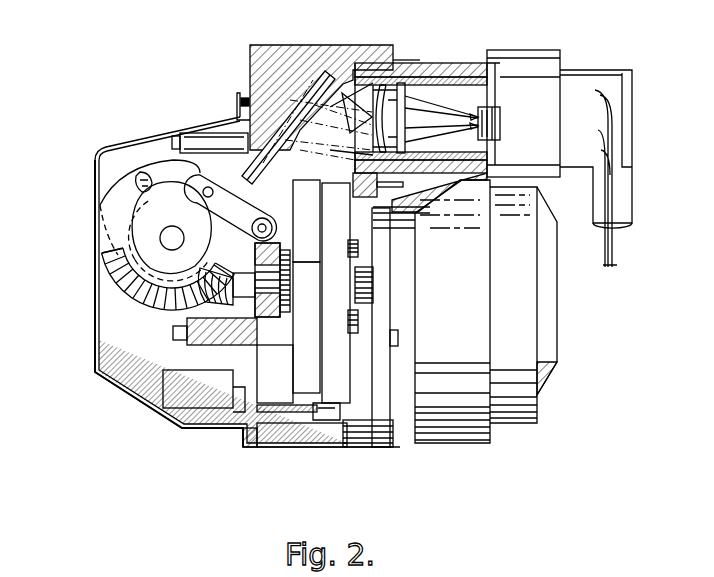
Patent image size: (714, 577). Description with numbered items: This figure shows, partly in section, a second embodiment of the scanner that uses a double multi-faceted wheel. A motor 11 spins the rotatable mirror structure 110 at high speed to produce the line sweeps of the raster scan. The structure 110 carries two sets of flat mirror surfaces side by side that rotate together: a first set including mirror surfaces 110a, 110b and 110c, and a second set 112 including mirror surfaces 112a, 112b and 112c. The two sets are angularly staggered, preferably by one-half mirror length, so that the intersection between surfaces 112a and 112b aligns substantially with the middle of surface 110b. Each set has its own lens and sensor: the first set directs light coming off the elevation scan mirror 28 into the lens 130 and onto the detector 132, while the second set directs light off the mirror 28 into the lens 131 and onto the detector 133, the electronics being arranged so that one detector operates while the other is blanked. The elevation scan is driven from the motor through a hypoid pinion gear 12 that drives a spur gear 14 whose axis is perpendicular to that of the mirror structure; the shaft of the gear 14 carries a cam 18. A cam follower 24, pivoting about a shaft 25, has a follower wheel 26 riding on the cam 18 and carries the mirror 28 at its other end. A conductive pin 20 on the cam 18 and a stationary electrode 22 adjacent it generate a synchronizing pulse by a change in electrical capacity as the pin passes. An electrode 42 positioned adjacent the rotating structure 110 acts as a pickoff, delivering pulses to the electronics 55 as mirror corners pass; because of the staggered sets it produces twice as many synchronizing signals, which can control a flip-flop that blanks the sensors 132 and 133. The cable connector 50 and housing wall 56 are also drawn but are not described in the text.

The motor 11 is at (552, 312).
The hypoid gear 12 is at (170, 305).
The spur gear 14 is at (135, 300).
The cam 18 is at (130, 208).
The conductive pin 20 is at (143, 217).
The stationary electrode 22 is at (137, 172).
The cam follower 24 is at (240, 172).
The shaft 25 is at (252, 232).
The follower wheel 26 is at (173, 160).
The elevation scan mirror 28 is at (325, 72).
The electrode 42 is at (327, 422).
The cable connector 50 is at (618, 148).
The electronics 55 is at (163, 387).
The housing wall 56 is at (153, 418).
The rotatable mirror structure 110 is at (350, 210).
The mirror surface 110a is at (337, 220).
The mirror surface 110b is at (340, 287).
The mirror surface 110c is at (340, 343).
The second set of mirror surfaces 112 is at (310, 174).
The mirror surface 112a is at (308, 217).
The mirror surface 112b is at (300, 300).
The mirror surface 112c is at (307, 373).
The lens 130 is at (402, 100).
The lens 131 is at (415, 110).
The detector 132 is at (478, 110).
The detector 133 is at (512, 144).